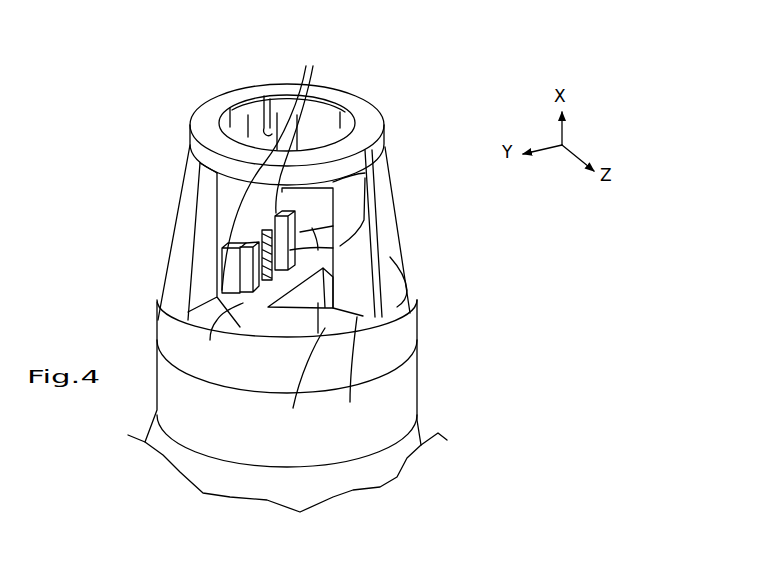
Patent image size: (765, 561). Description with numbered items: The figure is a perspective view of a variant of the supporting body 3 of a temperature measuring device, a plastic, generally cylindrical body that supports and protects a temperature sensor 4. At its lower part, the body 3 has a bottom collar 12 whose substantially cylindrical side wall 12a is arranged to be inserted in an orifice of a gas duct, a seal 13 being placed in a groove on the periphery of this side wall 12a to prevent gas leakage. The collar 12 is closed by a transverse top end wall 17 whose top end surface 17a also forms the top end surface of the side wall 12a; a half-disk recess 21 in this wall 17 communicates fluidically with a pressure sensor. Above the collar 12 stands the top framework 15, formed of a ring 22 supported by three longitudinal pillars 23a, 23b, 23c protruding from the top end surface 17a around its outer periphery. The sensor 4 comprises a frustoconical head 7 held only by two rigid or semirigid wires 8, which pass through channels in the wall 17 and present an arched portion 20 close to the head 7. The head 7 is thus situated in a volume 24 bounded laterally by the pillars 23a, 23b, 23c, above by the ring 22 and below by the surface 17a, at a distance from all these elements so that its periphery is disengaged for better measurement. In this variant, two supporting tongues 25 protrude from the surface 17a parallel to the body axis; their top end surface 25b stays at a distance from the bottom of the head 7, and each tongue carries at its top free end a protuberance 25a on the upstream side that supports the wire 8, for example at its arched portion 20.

The supporting body 3 is at (384, 56).
The top framework 15 is at (390, 107).
The ring 22 is at (223, 97).
The longitudinal pillar 23b is at (266, 104).
The top end surface of supporting tongue 25b is at (275, 166).
The head 7 is at (190, 152).
The temperature sensor 4 is at (219, 207).
The longitudinal pillar 23a is at (188, 222).
The arched portion 20 is at (218, 258).
The wires 8 is at (200, 291).
The volume 24 is at (323, 217).
The supporting tongues 25 is at (377, 203).
The longitudinal pillar 23c is at (383, 240).
The top end wall 17 is at (410, 285).
The bottom collar 12 is at (419, 309).
The side wall 12a is at (410, 370).
The recess 21 is at (302, 376).
The top end surface 17a is at (356, 369).
The protuberance 25a is at (318, 303).
The seal 13 is at (428, 440).